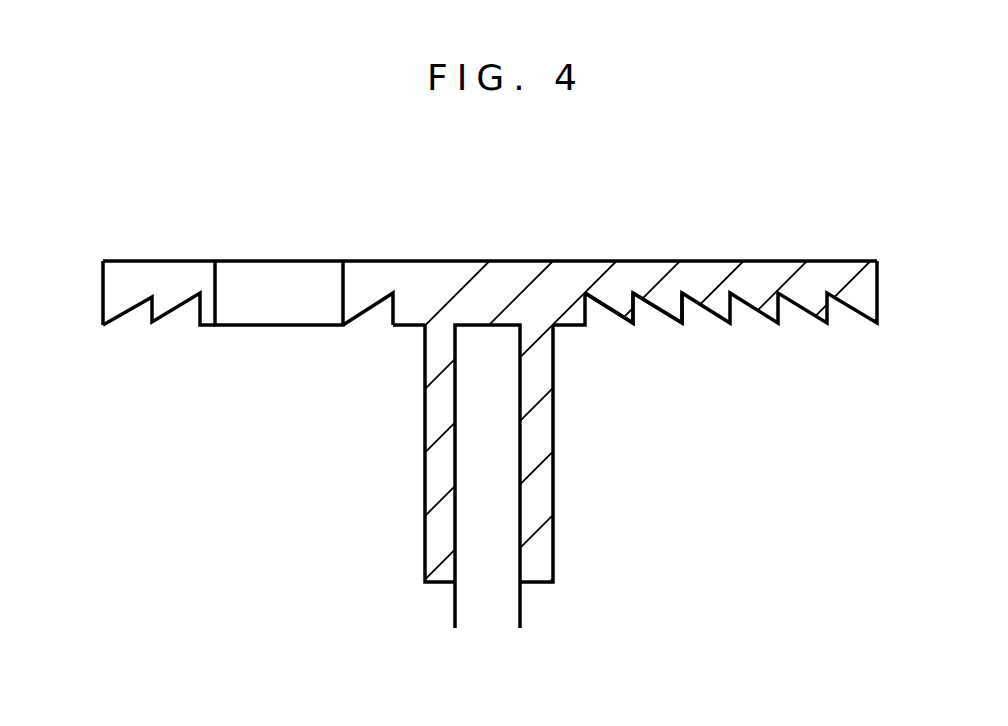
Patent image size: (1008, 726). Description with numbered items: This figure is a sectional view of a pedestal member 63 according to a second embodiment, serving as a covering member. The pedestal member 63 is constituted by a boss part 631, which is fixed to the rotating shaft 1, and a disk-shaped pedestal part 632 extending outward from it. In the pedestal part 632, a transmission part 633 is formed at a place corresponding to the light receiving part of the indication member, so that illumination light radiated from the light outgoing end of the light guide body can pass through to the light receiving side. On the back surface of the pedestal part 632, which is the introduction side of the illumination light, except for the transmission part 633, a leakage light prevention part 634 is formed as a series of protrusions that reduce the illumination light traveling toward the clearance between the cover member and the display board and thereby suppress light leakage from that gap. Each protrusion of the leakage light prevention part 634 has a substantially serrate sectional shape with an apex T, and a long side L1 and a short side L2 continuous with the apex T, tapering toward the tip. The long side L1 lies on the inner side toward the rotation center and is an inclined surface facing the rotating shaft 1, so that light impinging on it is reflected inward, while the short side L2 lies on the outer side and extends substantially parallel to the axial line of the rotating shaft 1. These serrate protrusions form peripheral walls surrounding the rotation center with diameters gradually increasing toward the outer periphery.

The rotating shaft 1 is at (472, 517).
The pedestal member 63 is at (493, 285).
The boss part 631 is at (438, 431).
The pedestal part 632 is at (772, 275).
The transmission part 633 is at (287, 285).
The leakage light prevention part 634 is at (163, 307).
The long side L1 is at (175, 312).
The short side L2 is at (165, 263).
The apex T is at (153, 293).